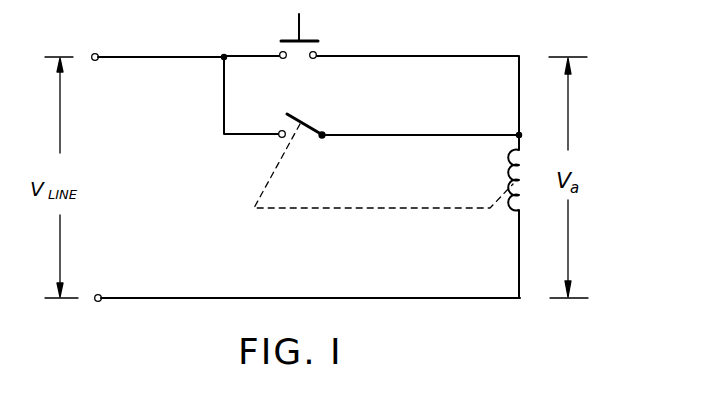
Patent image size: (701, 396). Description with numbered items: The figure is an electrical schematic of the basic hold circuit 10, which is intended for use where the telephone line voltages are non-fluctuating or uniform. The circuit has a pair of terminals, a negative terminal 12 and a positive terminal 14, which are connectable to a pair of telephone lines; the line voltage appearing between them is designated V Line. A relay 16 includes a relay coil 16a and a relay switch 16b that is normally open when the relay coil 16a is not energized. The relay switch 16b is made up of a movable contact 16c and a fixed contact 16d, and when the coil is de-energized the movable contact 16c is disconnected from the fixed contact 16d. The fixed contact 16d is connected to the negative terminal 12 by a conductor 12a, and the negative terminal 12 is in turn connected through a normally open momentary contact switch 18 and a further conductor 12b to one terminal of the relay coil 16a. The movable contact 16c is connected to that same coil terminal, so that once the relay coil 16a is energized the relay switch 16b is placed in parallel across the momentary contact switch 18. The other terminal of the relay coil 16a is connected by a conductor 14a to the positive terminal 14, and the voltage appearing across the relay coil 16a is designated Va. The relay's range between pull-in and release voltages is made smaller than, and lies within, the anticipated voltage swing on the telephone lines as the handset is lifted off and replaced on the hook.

The hold circuit 10 is at (118, 31).
The negative terminal 12 is at (97, 62).
The conductor 12a is at (153, 55).
The conductor 12b is at (425, 56).
The positive terminal 14 is at (100, 303).
The conductor 14a is at (358, 299).
The relay 16 is at (382, 216).
The relay coil 16a is at (522, 212).
The relay switch 16b is at (278, 140).
The movable contact 16c is at (297, 118).
The fixed contact 16d is at (281, 130).
The momentary contact switch 18 is at (320, 34).